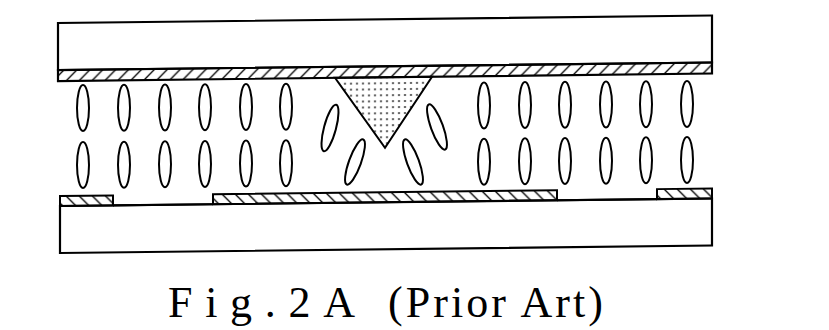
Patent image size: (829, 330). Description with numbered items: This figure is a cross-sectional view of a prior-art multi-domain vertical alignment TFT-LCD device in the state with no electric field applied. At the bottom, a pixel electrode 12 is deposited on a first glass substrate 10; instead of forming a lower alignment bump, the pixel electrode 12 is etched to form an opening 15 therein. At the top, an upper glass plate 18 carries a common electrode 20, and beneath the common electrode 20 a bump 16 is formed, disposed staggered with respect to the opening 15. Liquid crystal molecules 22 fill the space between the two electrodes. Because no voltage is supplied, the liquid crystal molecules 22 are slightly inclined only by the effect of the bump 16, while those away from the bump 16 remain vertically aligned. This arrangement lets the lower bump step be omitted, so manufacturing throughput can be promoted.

The first glass substrate 10 is at (397, 237).
The pixel electrode 12 is at (713, 193).
The opening 15 is at (164, 197).
The bump 16 is at (383, 113).
The upper glass plate 18 is at (397, 52).
The common electrode 20 is at (713, 68).
The liquid crystal molecules 22 is at (688, 114).